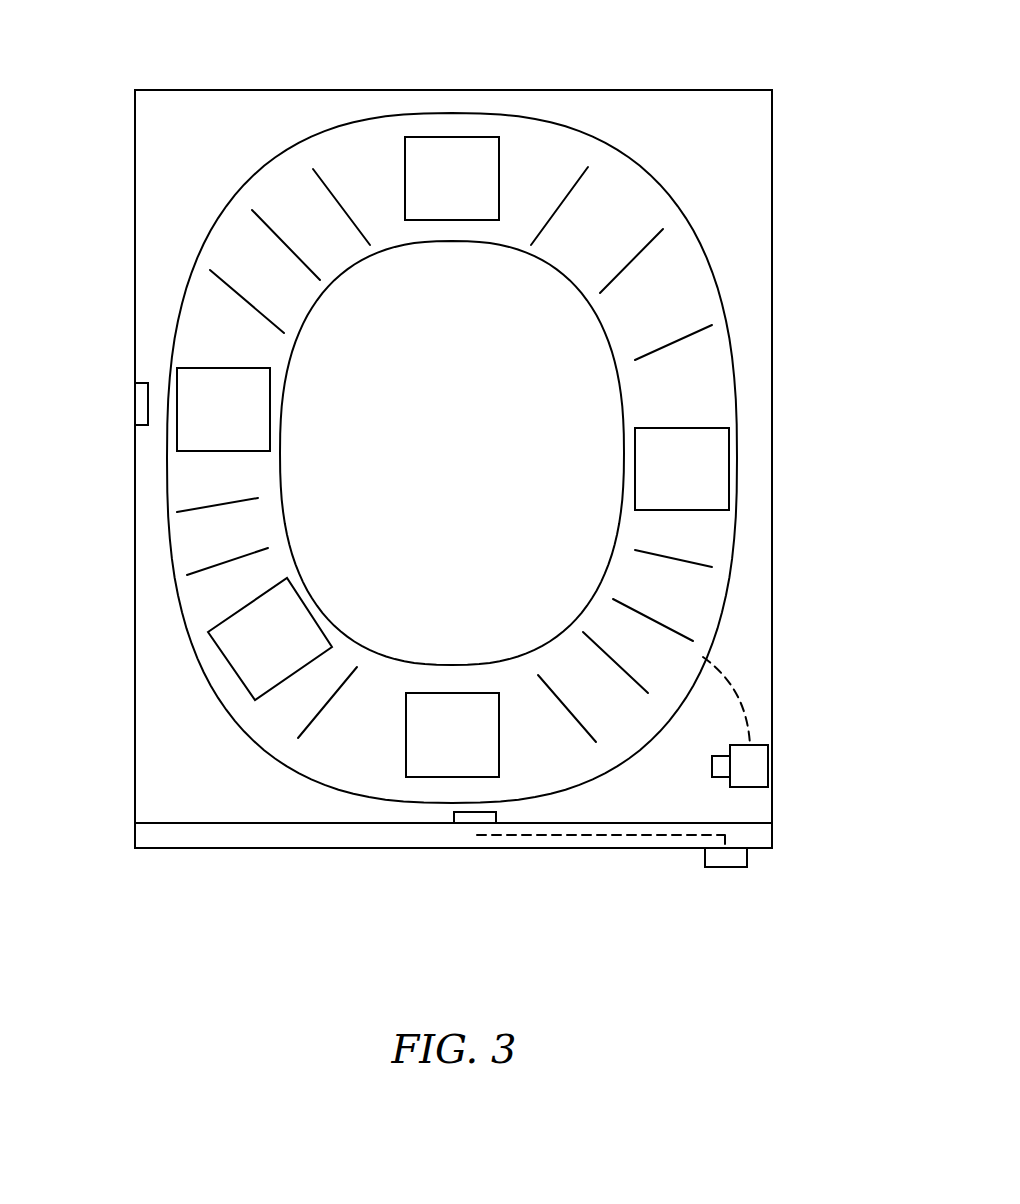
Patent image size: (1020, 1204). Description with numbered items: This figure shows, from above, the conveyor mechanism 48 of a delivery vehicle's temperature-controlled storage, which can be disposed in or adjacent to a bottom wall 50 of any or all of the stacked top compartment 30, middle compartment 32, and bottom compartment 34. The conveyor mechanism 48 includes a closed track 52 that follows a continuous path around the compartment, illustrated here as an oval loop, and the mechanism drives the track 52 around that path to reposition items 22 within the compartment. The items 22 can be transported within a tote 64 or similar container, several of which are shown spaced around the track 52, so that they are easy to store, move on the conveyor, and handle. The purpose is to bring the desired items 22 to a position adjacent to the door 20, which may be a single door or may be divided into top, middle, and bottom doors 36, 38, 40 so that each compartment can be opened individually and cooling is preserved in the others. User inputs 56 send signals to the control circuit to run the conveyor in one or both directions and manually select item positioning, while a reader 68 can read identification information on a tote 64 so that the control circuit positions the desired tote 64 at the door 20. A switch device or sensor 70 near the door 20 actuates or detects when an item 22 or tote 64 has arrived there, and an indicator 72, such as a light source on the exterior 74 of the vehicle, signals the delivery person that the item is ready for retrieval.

The door 20 is at (453, 918).
The items 22 is at (450, 461).
The top compartment 30 is at (453, 424).
The middle compartment 32 is at (453, 424).
The bottom compartment 34 is at (680, 90).
The top door 36 is at (453, 918).
The middle door 38 is at (453, 918).
The bottom door 40 is at (188, 838).
The conveyor mechanism 48 is at (702, 255).
The bottom wall 50 is at (737, 292).
The closed track 52 is at (700, 380).
The user inputs 56 is at (750, 763).
The tote 64 is at (453, 137).
The reader 68 is at (135, 403).
The switch device or sensor 70 is at (475, 823).
The indicator 72 is at (722, 867).
The exterior 74 is at (605, 848).